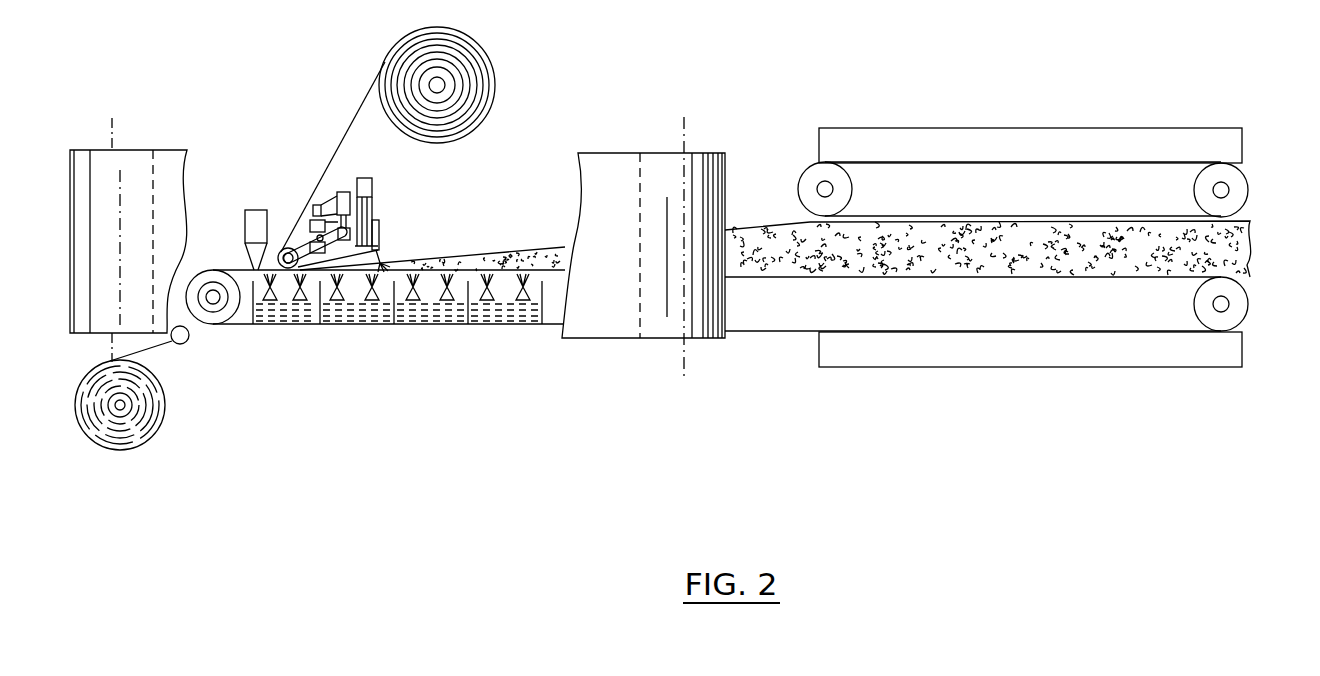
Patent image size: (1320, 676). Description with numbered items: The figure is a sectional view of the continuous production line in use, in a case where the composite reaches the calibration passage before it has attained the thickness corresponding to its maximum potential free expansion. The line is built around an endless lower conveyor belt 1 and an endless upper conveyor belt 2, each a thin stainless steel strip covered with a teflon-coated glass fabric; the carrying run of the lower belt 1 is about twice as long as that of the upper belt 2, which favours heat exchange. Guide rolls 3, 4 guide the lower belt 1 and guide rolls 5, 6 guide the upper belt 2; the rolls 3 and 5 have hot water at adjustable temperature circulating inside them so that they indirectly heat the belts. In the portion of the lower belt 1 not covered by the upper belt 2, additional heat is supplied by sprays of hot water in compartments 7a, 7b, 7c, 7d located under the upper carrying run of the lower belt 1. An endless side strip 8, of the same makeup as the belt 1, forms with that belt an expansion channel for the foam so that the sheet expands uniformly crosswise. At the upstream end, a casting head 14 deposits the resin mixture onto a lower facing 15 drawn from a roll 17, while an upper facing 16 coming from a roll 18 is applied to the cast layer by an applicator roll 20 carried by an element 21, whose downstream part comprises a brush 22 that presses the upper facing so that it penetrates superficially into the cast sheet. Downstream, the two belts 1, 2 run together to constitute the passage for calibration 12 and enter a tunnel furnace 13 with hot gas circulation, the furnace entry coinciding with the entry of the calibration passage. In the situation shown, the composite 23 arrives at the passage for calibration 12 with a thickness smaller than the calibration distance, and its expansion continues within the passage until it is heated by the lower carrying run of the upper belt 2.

The endless conveyor belt 1 is at (1153, 336).
The endless upper conveyor belt 2 is at (1178, 165).
The guide roll 3 is at (208, 272).
The guide roll 4 is at (1236, 318).
The guide roll 5 is at (820, 178).
The guide roll 6 is at (1203, 195).
The compartment 7a is at (289, 302).
The compartment 7b is at (354, 296).
The compartment 7c is at (431, 296).
The compartment 7d is at (501, 296).
The endless side strip 8 is at (618, 218).
The passage for calibration 12 is at (802, 219).
The tunnel furnace 13 is at (1078, 145).
The casting head 14 is at (247, 225).
The lower facing 15 is at (165, 352).
The upper facing 16 is at (337, 147).
The roll 17 is at (155, 432).
The roll 18 is at (478, 91).
The applicator roll 20 is at (285, 248).
The element 21 is at (345, 170).
The brush 22 is at (390, 246).
The composite 23 is at (820, 270).